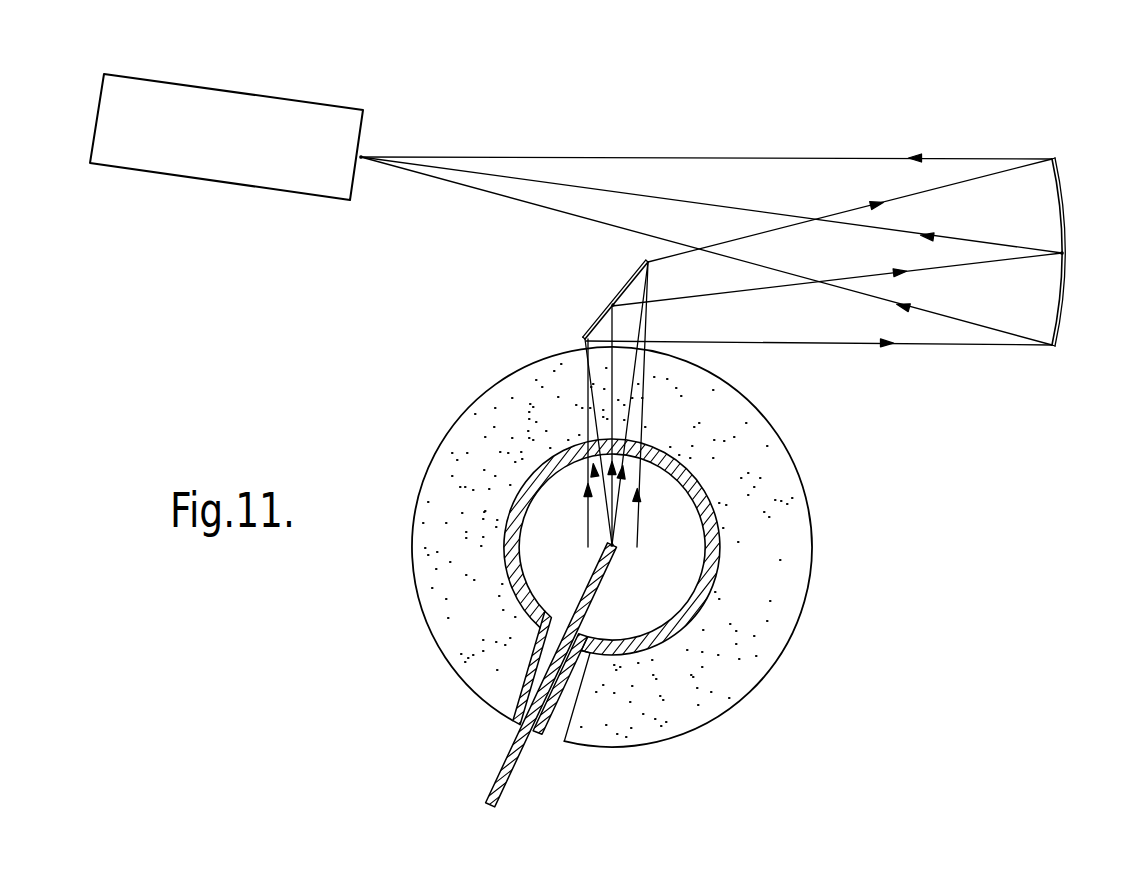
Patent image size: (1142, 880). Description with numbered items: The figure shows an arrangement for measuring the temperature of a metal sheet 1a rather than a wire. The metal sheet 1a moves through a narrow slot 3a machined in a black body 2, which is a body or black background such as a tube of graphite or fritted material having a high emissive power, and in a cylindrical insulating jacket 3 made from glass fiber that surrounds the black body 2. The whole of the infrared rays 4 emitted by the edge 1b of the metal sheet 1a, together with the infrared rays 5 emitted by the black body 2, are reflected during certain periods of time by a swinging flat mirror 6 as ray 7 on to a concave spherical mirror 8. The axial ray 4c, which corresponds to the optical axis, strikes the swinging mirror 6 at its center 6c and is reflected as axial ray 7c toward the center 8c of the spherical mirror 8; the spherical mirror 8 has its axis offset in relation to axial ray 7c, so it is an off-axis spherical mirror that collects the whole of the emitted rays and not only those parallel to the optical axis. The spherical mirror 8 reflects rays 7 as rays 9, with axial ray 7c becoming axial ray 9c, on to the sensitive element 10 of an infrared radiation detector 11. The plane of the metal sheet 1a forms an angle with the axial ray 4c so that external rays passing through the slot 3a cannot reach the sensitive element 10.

The metal sheet 1a is at (588, 605).
The edge of metal sheet 1b is at (614, 548).
The black body 2 is at (717, 513).
The cylindrical insulating jacket 3 is at (788, 524).
The narrow slot 3a is at (548, 695).
The infrared rays 4 is at (620, 490).
The axial ray 4c is at (612, 422).
The infrared rays emitted by the black body 5 is at (637, 512).
The swinging flat mirror 6 is at (625, 290).
The center of swinging mirror 6c is at (614, 304).
The ray 7 is at (782, 230).
The axial ray 7c is at (968, 267).
The concave spherical mirror 8 is at (1065, 202).
The center of spherical mirror 8c is at (1064, 253).
The rays 9 is at (802, 158).
The axial ray 9c is at (695, 202).
The sensitive element 10 is at (363, 153).
The infrared radiation detector 11 is at (293, 116).